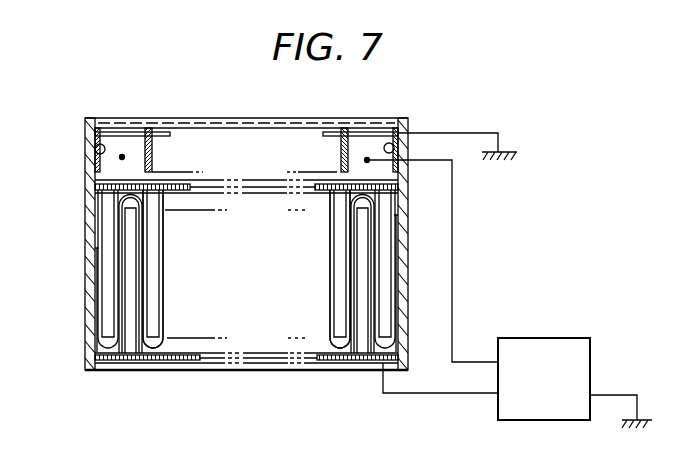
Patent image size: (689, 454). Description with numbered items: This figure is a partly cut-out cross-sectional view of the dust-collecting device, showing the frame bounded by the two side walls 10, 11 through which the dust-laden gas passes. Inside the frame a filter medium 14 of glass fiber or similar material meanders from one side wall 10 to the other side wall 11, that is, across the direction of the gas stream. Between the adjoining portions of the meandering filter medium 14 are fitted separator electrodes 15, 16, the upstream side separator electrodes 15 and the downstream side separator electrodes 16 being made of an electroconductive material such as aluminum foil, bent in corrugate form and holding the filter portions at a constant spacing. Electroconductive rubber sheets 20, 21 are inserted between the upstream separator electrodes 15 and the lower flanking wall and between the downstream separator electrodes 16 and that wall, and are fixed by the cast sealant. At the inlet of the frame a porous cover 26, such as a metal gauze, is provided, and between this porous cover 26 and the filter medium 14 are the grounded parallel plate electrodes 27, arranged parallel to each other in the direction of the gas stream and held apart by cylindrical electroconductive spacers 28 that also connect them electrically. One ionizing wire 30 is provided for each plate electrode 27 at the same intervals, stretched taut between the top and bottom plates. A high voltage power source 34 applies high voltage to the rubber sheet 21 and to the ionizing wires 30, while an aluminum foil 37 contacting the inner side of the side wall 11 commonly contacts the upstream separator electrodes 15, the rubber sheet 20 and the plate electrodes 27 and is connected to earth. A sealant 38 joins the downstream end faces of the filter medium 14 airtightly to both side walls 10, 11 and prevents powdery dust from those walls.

The side wall 10 is at (88, 232).
The side wall 11 is at (402, 290).
The filter medium 14 is at (163, 330).
The upstream side separator electrode 15 is at (153, 262).
The downstream side separator electrode 16 is at (130, 317).
The electroconductive rubber sheet 20 is at (180, 192).
The electroconductive rubber sheet 21 is at (176, 346).
The porous cover 26 is at (203, 123).
The grounded parallel plate electrode 27 is at (92, 152).
The cylindrical electroconductive spacer 28 is at (113, 132).
The ionizing wire 30 is at (122, 157).
The high voltage power source 34 is at (548, 338).
The aluminum foil 37 is at (390, 213).
The sealant 38 is at (95, 347).